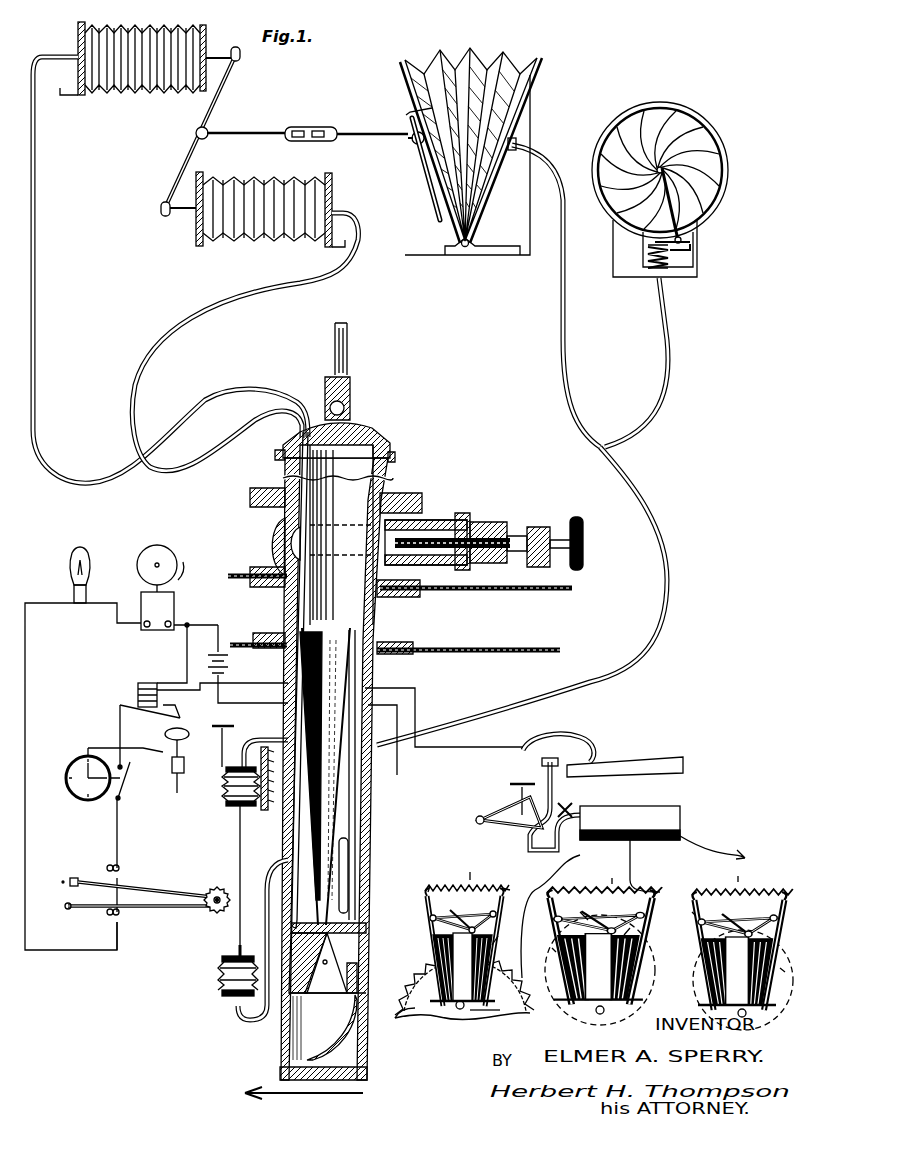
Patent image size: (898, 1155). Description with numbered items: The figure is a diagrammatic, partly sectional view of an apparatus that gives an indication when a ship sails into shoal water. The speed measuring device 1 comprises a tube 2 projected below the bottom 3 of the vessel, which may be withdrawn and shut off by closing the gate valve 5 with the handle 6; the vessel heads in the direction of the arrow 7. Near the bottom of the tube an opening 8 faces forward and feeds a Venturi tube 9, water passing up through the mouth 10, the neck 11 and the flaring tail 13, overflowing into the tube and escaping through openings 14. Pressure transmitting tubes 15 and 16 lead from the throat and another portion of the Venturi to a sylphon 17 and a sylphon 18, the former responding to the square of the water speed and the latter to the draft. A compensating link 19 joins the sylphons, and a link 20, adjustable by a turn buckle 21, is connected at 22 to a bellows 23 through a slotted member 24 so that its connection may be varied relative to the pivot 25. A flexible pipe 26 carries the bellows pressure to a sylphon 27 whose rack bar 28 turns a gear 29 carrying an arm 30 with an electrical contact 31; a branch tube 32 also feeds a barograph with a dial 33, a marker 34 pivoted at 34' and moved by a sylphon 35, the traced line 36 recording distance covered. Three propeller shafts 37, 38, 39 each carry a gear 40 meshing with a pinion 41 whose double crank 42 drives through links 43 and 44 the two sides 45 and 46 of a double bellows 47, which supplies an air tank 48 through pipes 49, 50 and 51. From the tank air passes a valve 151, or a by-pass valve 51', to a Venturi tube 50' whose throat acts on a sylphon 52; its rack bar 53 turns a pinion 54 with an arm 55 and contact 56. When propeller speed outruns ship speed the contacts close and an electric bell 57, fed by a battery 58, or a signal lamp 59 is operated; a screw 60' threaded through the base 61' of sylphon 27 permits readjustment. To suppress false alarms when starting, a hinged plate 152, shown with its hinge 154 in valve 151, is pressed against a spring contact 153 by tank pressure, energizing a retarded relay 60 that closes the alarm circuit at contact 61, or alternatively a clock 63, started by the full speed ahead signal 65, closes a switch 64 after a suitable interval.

The speed measuring device 1 is at (388, 500).
The tube 2 is at (372, 668).
The bottom 3 is at (477, 650).
The gate valve 5 is at (470, 518).
The handle 6 is at (584, 530).
The arrow 7 is at (304, 1102).
The opening 8 is at (292, 1050).
The Venturi tube 9 is at (345, 775).
The mouth 10 is at (327, 963).
The neck 11 is at (330, 930).
The flaring tail 13 is at (345, 750).
The openings 14 is at (350, 848).
The pressure transmitting tube 15 is at (288, 866).
The pressure transmitting tube 16 is at (300, 833).
The sylphon 17 is at (245, 321).
The sylphon 18 is at (146, 72).
The compensating link 19 is at (188, 148).
The link 20 is at (255, 133).
The turn buckle 21 is at (312, 125).
The connection 22 is at (412, 135).
The bellows 23 is at (480, 62).
The slotted member 24 is at (428, 180).
The pivot 25 is at (465, 247).
The flexible pipe 26 is at (560, 325).
The sylphon 27 is at (226, 782).
The rack bar 28 is at (240, 826).
The gear 29 is at (214, 886).
The arm 30 is at (142, 876).
The electrical contact 31 is at (55, 886).
The branch tube 32 is at (672, 392).
The dial 33 is at (712, 147).
The marker 34 is at (681, 205).
The pivot 34' is at (704, 255).
The sylphon 35 is at (647, 257).
The traced line 36 is at (666, 150).
The propeller shaft 37 is at (505, 1015).
The propeller shaft 38 is at (603, 956).
The propeller shaft 39 is at (741, 959).
The gear 40 is at (413, 1006).
The pinion 41 is at (507, 939).
The double crank 42 is at (602, 869).
The link 43 is at (576, 907).
The link 44 is at (705, 947).
The side of double bellows 45 is at (546, 919).
The side of double bellows 46 is at (578, 914).
The double bellows 47 is at (712, 990).
The air tank 48 is at (680, 808).
The pipe 49 is at (564, 866).
The pipe 50 is at (647, 866).
The Venturi tube 50' is at (625, 757).
The pipe 51 is at (724, 853).
The by-pass valve 51' is at (586, 796).
The sylphon 52 is at (220, 985).
The rack bar 53 is at (238, 944).
The pinion 54 is at (206, 908).
The arm 55 is at (138, 908).
The contact 56 is at (68, 914).
The electric bell 57 is at (170, 598).
The battery 58 is at (238, 665).
The signal lamp 59 is at (100, 548).
The retarded relay 60 is at (204, 684).
The screw 60' is at (236, 736).
The contact 61 is at (161, 730).
The base 61' is at (349, 760).
The clock 63 is at (78, 752).
The switch 64 is at (124, 790).
The full speed ahead signal 65 is at (166, 734).
The valve 151 is at (514, 799).
The hinged plate 152 is at (508, 832).
The spring contact 153 is at (552, 804).
The pivot 154 is at (476, 826).